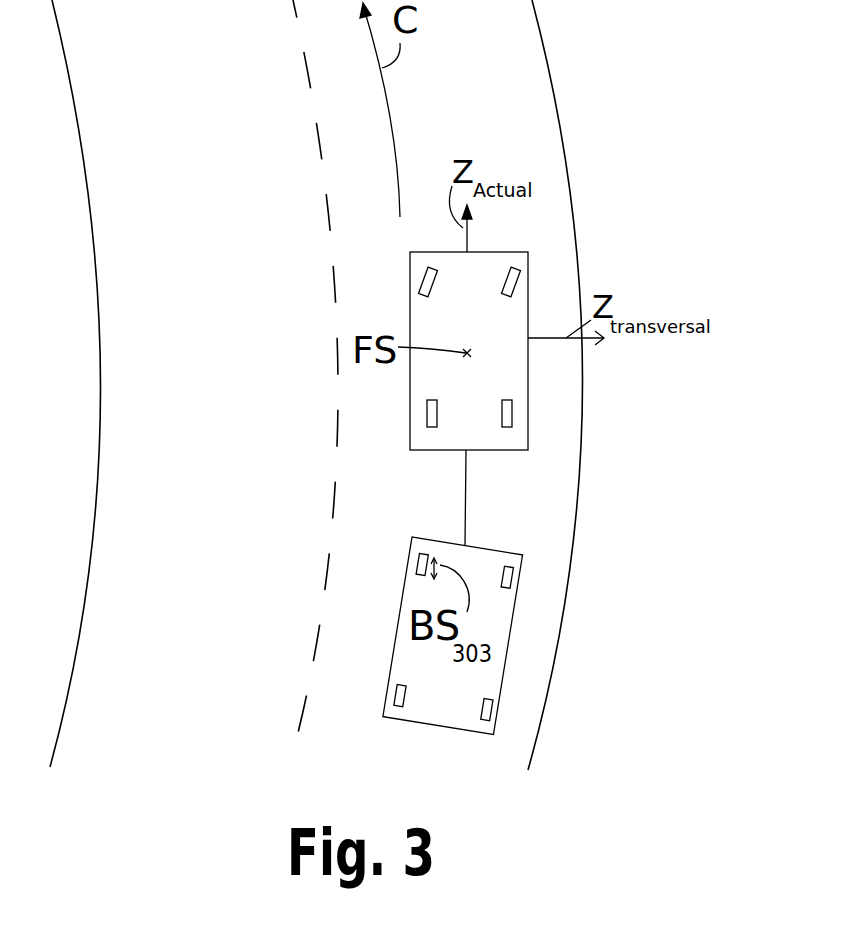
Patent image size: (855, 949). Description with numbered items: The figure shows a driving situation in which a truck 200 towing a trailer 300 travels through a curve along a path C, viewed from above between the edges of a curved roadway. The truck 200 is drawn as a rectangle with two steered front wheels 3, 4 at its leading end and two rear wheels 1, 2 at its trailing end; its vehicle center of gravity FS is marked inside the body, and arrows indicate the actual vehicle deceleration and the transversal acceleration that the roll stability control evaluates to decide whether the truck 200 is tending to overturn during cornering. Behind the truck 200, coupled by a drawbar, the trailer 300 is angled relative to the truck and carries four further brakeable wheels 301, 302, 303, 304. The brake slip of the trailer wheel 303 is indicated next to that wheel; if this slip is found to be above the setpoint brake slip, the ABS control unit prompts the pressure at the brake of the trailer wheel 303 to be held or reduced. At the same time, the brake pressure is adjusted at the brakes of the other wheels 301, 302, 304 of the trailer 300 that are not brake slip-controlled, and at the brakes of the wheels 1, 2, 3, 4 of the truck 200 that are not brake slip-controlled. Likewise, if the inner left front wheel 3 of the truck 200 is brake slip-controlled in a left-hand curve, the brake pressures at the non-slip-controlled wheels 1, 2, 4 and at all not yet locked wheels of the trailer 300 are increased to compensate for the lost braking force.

The rear wheel 1 is at (427, 418).
The rear wheel 2 is at (508, 427).
The front wheel 3 is at (423, 287).
The front wheel 4 is at (518, 278).
The vehicle/truck 200 is at (410, 450).
The trailer 300 is at (385, 708).
The wheel of trailer 301 is at (397, 694).
The wheel of trailer 302 is at (489, 719).
The wheel of trailer 303 is at (420, 575).
The wheel of trailer 304 is at (513, 582).